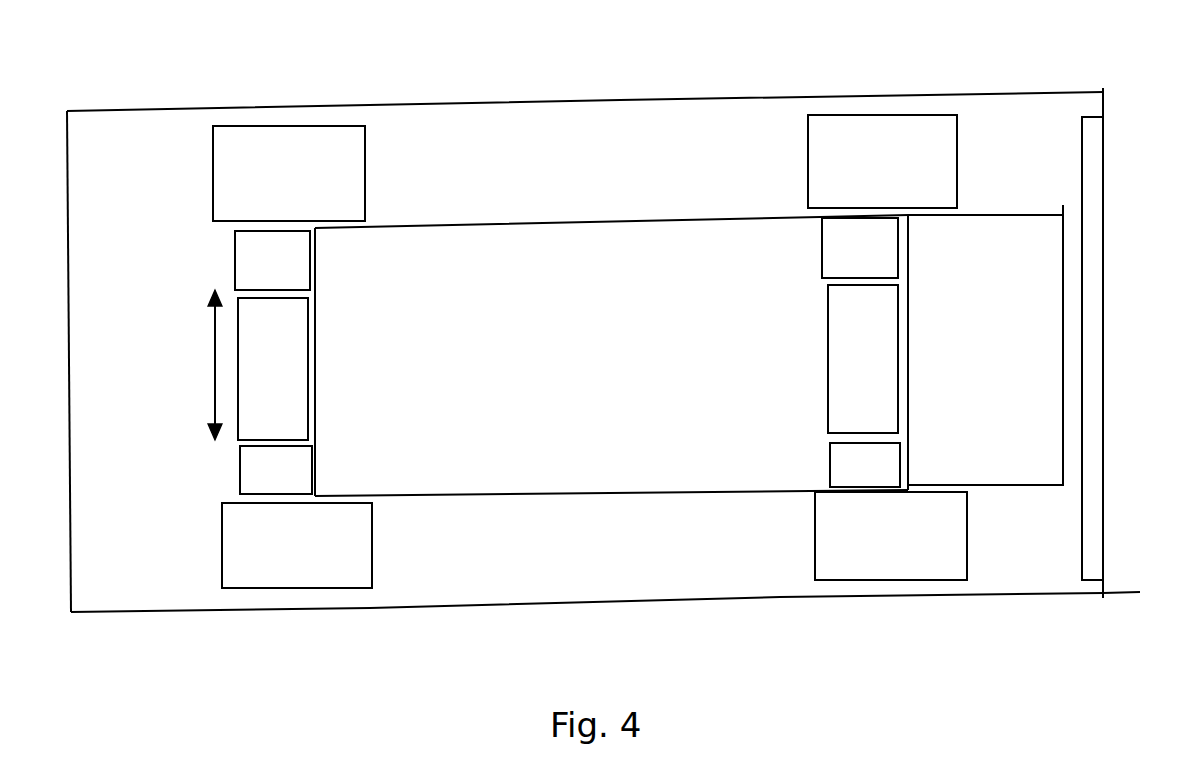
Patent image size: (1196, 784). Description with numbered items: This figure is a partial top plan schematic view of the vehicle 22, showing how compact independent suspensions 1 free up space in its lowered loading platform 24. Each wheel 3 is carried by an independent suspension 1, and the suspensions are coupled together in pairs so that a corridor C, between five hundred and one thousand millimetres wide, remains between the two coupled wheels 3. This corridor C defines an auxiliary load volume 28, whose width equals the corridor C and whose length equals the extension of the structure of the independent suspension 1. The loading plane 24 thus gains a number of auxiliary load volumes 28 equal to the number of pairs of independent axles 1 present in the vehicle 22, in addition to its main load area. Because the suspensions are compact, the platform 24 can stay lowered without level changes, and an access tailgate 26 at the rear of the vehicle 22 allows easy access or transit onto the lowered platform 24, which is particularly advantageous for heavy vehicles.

The vehicle 22 is at (621, 97).
The lowered loading platform 24 is at (600, 379).
The access tailgate 26 is at (1105, 356).
The auxiliary load volume 28 is at (290, 383).
The wheel 3 is at (300, 190).
The independent suspension 1 is at (290, 279).
The corridor C is at (213, 362).